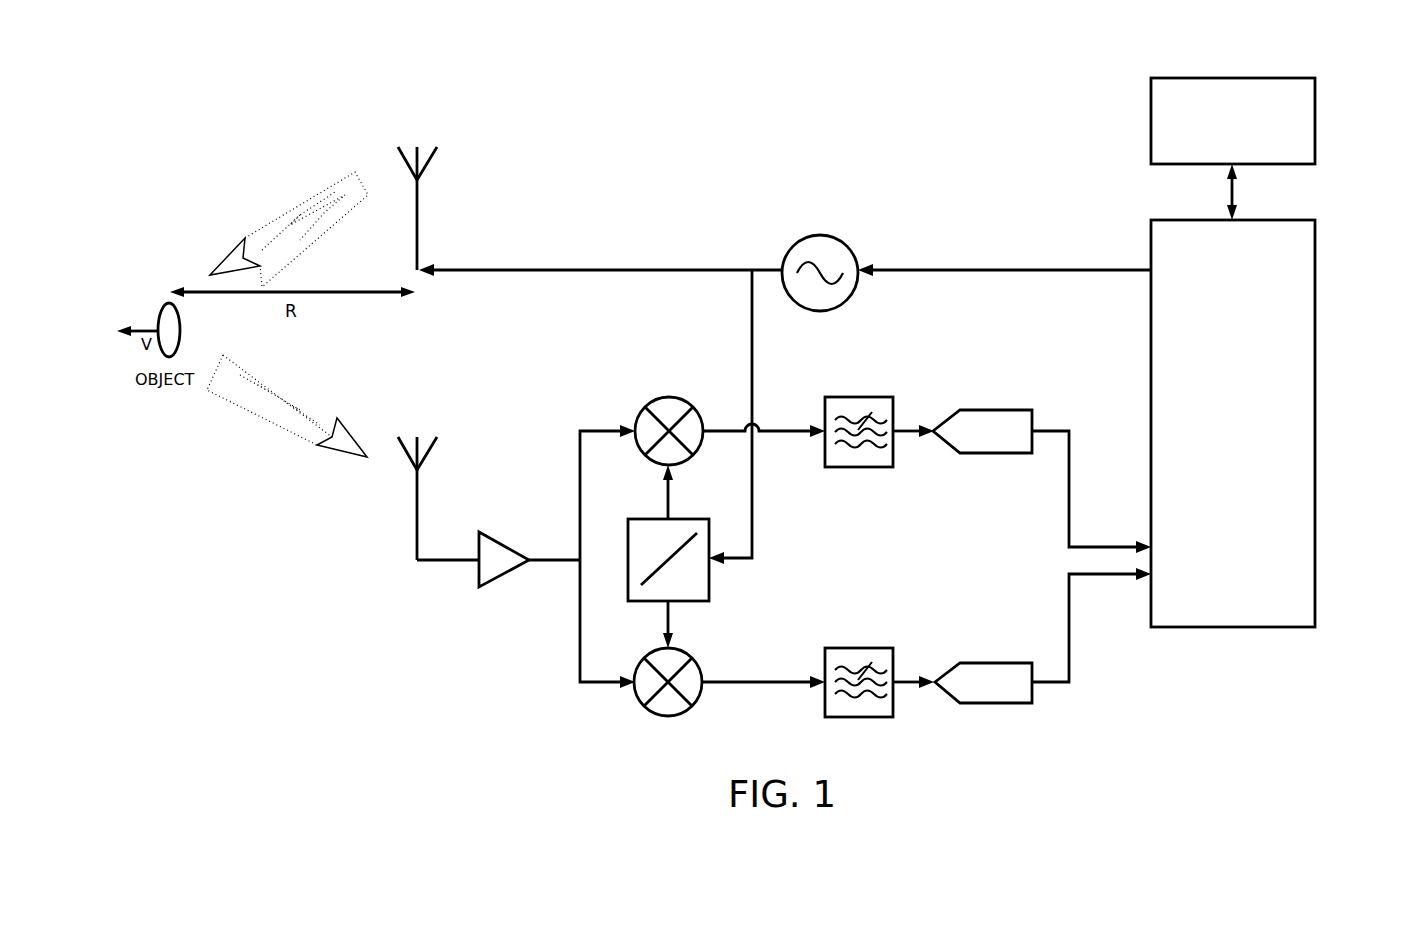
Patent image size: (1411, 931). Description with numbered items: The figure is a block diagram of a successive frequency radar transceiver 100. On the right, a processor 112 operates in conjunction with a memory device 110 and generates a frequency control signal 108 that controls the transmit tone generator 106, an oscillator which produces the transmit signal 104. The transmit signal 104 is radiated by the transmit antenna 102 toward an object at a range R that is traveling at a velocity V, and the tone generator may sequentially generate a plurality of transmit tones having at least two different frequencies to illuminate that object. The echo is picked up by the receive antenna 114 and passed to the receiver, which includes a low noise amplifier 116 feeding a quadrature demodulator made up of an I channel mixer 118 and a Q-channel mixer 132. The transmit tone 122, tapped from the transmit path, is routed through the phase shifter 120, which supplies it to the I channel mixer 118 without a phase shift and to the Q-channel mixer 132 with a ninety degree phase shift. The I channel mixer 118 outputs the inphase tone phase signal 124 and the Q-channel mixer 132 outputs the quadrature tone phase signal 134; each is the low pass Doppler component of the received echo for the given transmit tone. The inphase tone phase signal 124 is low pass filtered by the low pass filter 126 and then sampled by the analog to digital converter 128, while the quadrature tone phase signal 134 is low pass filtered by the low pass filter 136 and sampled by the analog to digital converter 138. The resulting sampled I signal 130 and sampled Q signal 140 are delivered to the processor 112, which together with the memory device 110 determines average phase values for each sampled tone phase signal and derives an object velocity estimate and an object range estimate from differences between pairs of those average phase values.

The radar transceiver 100 is at (911, 75).
The transmit antenna 102 is at (446, 208).
The transmit signal 104 is at (600, 258).
The transmit tone generator 106 is at (836, 258).
The frequency control signal 108 is at (1004, 258).
The memory device 110 is at (1269, 114).
The processor 112 is at (1269, 415).
The receive antenna 114 is at (444, 498).
The low noise amplifier 116 is at (525, 549).
The I channel mixer 118 is at (687, 415).
The phase shifter 120 is at (690, 544).
The transmit tone 122 is at (764, 417).
The inphase tone phase signal 124 is at (782, 462).
The low pass filter 126 is at (880, 417).
The analog to digital converter 128 is at (992, 415).
The sampled I signal 130 is at (1091, 492).
The Q-channel mixer 132 is at (695, 667).
The quadrature tone phase signal 134 is at (763, 670).
The low pass filter 136 is at (880, 665).
The analog to digital converter 138 is at (1000, 665).
The sampled Q signal 140 is at (1074, 625).